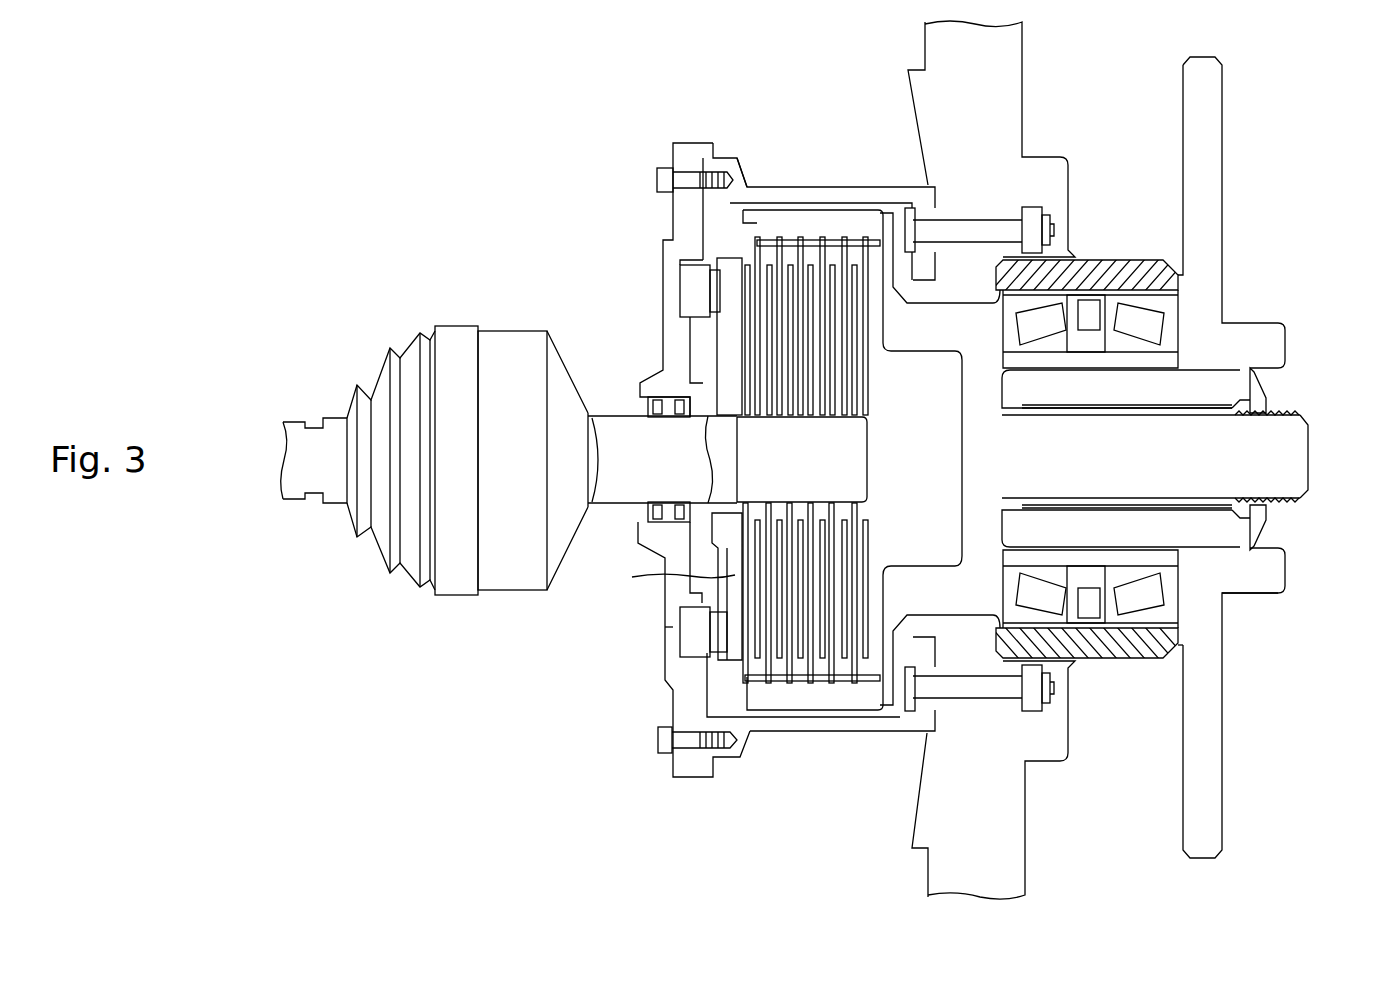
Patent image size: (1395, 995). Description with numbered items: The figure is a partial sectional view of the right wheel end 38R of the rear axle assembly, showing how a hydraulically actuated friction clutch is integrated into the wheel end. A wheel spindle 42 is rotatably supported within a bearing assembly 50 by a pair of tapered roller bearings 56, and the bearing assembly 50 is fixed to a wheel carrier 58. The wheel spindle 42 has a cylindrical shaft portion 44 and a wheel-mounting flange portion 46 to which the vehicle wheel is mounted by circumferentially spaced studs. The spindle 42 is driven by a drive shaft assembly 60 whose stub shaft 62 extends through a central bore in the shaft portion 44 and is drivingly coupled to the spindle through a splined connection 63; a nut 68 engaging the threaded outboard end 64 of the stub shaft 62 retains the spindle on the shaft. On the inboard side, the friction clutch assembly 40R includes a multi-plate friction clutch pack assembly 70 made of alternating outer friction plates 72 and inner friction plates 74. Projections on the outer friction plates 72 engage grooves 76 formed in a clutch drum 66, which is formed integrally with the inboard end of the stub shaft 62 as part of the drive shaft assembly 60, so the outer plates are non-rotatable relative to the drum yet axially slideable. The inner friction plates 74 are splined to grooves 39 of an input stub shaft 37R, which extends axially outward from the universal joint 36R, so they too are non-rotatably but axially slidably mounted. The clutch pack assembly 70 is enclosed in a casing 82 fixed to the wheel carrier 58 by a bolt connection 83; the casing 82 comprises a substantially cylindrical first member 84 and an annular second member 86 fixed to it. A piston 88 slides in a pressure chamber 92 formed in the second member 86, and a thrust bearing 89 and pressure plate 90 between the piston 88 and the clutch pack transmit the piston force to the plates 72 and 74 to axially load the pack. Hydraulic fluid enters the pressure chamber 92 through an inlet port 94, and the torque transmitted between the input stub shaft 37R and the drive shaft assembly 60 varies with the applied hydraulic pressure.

The universal joint 36R is at (408, 326).
The input stub shaft 37R is at (625, 420).
The right wheel end 38R is at (1125, 88).
The grooves 39 is at (798, 425).
The friction clutch assembly 40R is at (833, 172).
The wheel spindle 42 is at (1271, 595).
The cylindrical shaft portion 44 is at (1045, 525).
The wheel-mounting flange portion 46 is at (1213, 141).
The bearing assembly 50 is at (1127, 252).
The tapered roller bearings 56 is at (1083, 612).
The wheel carrier 58 is at (1005, 57).
The drive shaft assembly 60 is at (1318, 435).
The stub shaft 62 is at (1203, 470).
The splined connection 63 is at (1108, 412).
The threaded outboard end 64 is at (1298, 476).
The clutch drum 66 is at (858, 690).
The nut 68 is at (1292, 396).
The multi-plate friction clutch pack assembly 70 is at (737, 250).
The outer friction plates 72 is at (868, 523).
The inner friction plates 74 is at (868, 405).
The grooves 76 is at (812, 684).
The casing 82 is at (742, 752).
The bolt connection 83 is at (978, 697).
The first member 84 is at (890, 187).
The second member 86 is at (690, 230).
The piston 88 is at (688, 290).
The thrust bearing 89 is at (708, 647).
The pressure plate 90 is at (667, 597).
The pressure chamber 92 is at (668, 309).
The inlet port 94 is at (668, 634).